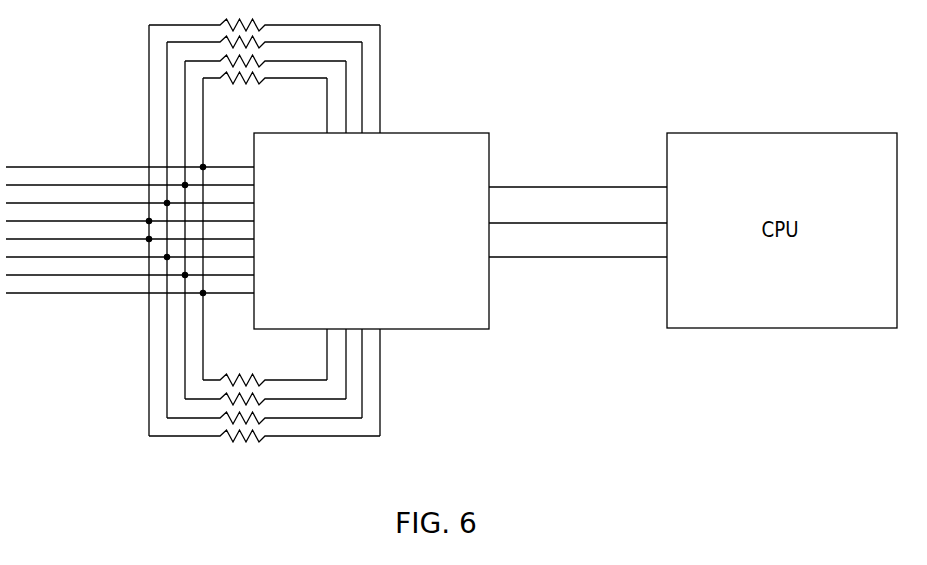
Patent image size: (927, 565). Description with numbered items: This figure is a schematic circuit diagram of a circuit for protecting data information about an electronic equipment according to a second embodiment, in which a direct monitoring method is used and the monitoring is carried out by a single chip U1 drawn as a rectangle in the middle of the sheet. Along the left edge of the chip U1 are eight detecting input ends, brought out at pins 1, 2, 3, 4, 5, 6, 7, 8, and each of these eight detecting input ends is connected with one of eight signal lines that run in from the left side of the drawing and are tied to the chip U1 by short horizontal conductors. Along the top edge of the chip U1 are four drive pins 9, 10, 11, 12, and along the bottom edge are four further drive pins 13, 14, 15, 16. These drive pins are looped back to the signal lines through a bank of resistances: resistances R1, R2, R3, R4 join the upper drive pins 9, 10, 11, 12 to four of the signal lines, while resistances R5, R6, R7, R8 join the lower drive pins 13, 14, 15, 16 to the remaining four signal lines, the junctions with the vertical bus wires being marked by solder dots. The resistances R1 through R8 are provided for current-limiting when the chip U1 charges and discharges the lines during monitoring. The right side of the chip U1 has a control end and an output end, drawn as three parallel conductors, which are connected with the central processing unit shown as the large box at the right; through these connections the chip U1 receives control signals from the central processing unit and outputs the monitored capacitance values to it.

The pin 1 SENS0 (KPP-COL0) 1 is at (153, 163).
The pin 2 SENS1 (KPP-COL1) 2 is at (153, 181).
The pin 3 SENS2 (CSPI1-SS3MAG) 3 is at (153, 199).
The pin 4 SENS3 (KPP-COL3) 4 is at (153, 217).
The pin 5 SENS4 (IC-IO) 5 is at (153, 235).
The pin 6 SENS5 (KPP-COL2) 6 is at (153, 253).
The pin 7 SENS6 (DS-IO) 7 is at (153, 271).
The pin 8 SENS7 (LCD-A0) 8 is at (153, 289).
The pin 9 DRV0 9 is at (322, 124).
The pin 10 DRV1 10 is at (342, 115).
The pin 11 DRV2 11 is at (359, 106).
The pin 12 DRV3 12 is at (377, 97).
The pin 13 DRV4 13 is at (322, 335).
The pin 14 DRV5 14 is at (343, 344).
The pin 15 DRV6 15 is at (358, 354).
The pin 16 DRV7 16 is at (377, 363).
The resistance R1 is at (265, 84).
The resistance R2 is at (265, 66).
The resistance R3 is at (264, 48).
The resistance R4 is at (264, 30).
The resistance R5 is at (265, 377).
The resistance R6 is at (265, 395).
The resistance R7 is at (264, 414).
The resistor R8 is at (264, 431).
The touch controller chip GT811 U1 is at (377, 247).